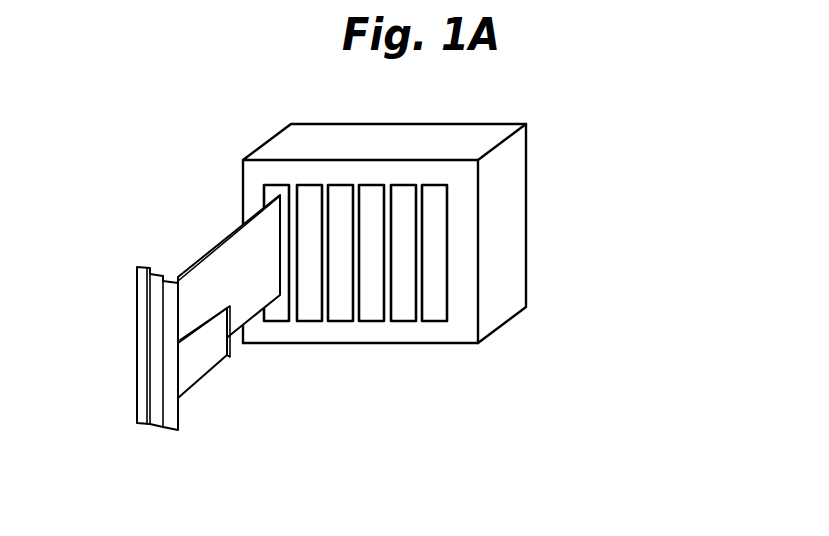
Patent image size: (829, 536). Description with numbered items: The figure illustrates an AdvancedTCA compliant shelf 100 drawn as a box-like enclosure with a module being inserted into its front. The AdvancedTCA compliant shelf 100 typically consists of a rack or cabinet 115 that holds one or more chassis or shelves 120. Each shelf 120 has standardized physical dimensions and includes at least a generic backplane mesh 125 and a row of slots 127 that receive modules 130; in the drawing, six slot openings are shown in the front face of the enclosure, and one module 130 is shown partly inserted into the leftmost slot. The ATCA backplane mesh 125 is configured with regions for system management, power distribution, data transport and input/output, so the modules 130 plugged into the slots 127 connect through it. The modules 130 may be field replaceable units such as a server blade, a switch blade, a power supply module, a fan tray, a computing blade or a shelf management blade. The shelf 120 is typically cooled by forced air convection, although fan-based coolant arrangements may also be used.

The AdvancedTCA compliant shelf 100 is at (365, 259).
The rack 115 is at (272, 138).
The shelf 120 is at (408, 333).
The backplane mesh 125 is at (527, 223).
The slots 127 is at (278, 190).
The modules 130 is at (137, 338).